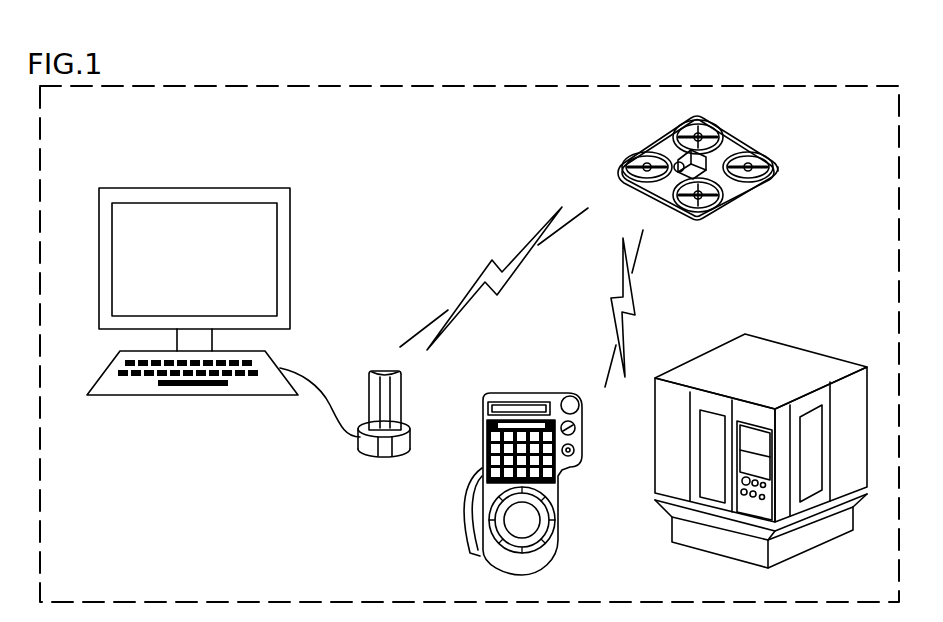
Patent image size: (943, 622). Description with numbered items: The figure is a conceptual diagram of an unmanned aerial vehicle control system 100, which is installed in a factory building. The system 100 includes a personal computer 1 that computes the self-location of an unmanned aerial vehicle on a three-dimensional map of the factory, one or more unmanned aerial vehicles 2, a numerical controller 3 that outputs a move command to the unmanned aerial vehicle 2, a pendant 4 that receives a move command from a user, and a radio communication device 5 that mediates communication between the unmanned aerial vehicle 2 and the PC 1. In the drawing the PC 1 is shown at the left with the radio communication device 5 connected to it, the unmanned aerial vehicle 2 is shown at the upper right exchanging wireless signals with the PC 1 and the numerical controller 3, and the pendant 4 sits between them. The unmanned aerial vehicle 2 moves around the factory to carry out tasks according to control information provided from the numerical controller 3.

The unmanned aerial vehicle control system 100 is at (638, 69).
The personal computer 1 is at (291, 205).
The unmanned aerial vehicle 2 is at (751, 143).
The numerical controller 3 is at (794, 347).
The pendant 4 is at (523, 392).
The radio communication device 5 is at (404, 424).